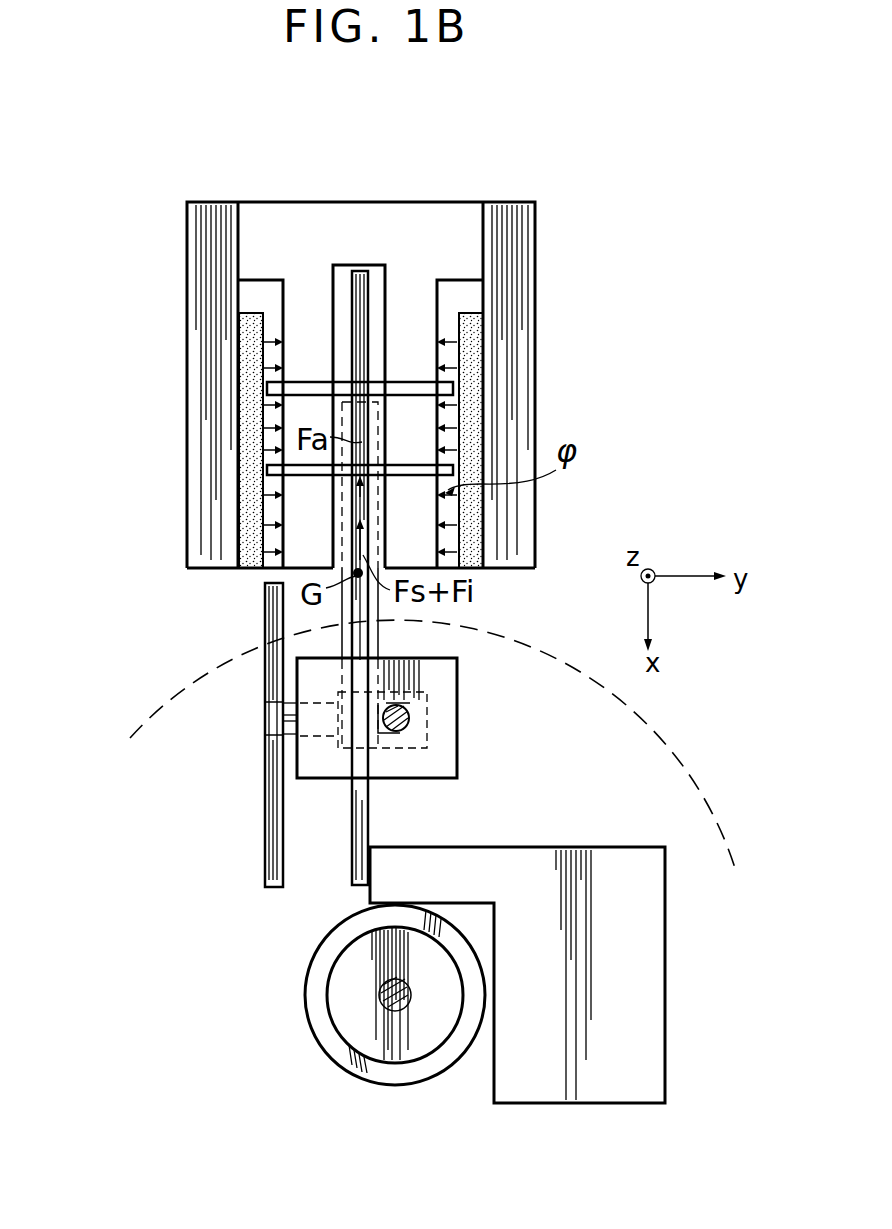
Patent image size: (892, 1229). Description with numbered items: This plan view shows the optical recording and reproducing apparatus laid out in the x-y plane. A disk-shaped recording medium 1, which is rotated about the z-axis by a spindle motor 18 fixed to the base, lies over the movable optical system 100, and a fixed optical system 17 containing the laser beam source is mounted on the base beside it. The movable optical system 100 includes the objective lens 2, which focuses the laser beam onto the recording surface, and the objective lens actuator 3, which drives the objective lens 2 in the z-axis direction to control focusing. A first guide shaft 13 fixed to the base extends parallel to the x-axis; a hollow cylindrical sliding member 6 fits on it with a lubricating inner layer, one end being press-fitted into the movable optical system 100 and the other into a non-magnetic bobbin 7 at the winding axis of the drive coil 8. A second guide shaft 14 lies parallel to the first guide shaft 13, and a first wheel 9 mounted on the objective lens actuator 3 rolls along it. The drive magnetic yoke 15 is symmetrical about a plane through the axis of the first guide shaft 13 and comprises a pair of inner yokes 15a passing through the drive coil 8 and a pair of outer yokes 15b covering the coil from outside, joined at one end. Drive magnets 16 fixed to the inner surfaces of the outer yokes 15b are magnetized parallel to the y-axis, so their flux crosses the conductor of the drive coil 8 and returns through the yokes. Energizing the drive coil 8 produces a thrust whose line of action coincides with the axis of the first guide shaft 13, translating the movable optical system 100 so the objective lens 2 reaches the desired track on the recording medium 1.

The recording medium 1 is at (567, 673).
The objective lens 2 is at (412, 720).
The objective lens actuator 3 is at (459, 751).
The sliding member 6 is at (342, 618).
The bobbin 7 is at (305, 386).
The drive coil 8 is at (410, 395).
The first wheel 9 is at (265, 727).
The first guide shaft 13 is at (354, 888).
The second guide shaft 14 is at (275, 888).
The drive magnetic yoke 15 is at (297, 210).
The inner yokes 15a is at (415, 290).
The outer yokes 15b is at (198, 285).
The drive magnets 16 is at (362, 440).
The fixed optical system 17 is at (665, 1000).
The spindle motor 18 is at (336, 1055).
The movable optical system 100 is at (432, 783).